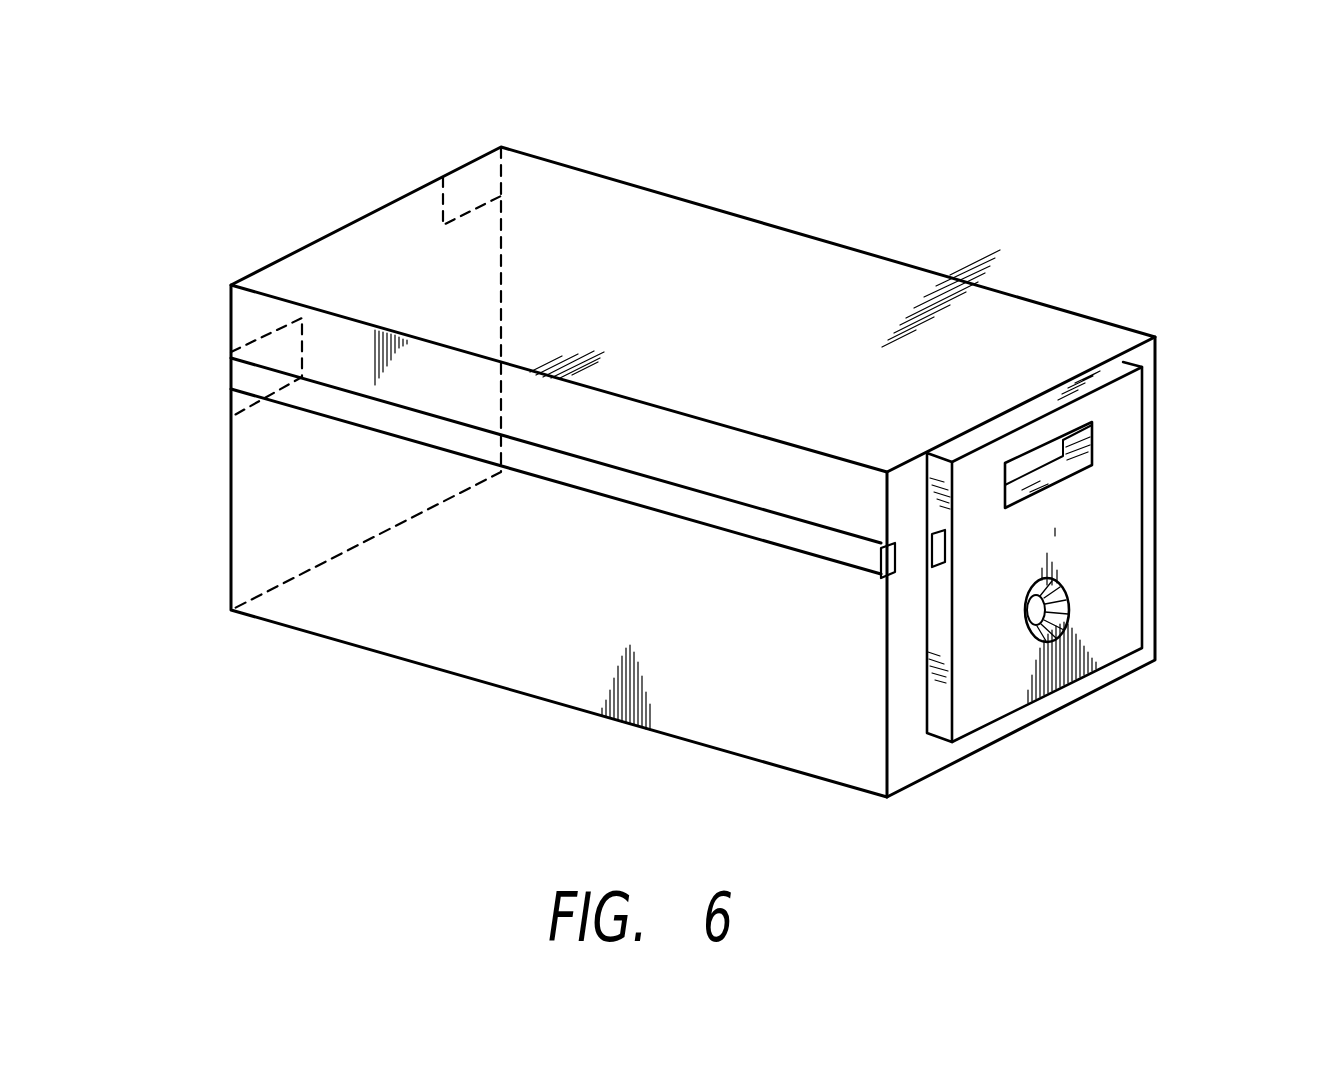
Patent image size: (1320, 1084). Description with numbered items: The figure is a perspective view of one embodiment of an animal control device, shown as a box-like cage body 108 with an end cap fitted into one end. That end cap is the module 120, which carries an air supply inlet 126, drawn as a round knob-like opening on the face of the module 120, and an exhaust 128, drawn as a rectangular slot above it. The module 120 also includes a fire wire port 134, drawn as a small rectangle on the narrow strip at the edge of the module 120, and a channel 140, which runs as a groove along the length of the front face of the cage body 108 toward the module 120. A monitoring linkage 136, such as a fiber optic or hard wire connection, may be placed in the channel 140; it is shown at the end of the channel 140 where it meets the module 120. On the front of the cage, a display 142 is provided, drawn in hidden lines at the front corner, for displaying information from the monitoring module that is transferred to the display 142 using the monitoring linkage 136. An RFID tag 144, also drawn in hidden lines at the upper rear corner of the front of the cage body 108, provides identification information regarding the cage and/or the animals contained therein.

The container body 108 is at (227, 512).
The module 120 is at (1113, 510).
The air supply inlet 126 is at (1058, 618).
The exhaust 128 is at (1064, 444).
The fire wire port 134 is at (938, 567).
The monitoring linkage 136 is at (896, 558).
The channel 140 is at (503, 478).
The display 142 is at (266, 332).
The RFID tag 144 is at (468, 176).